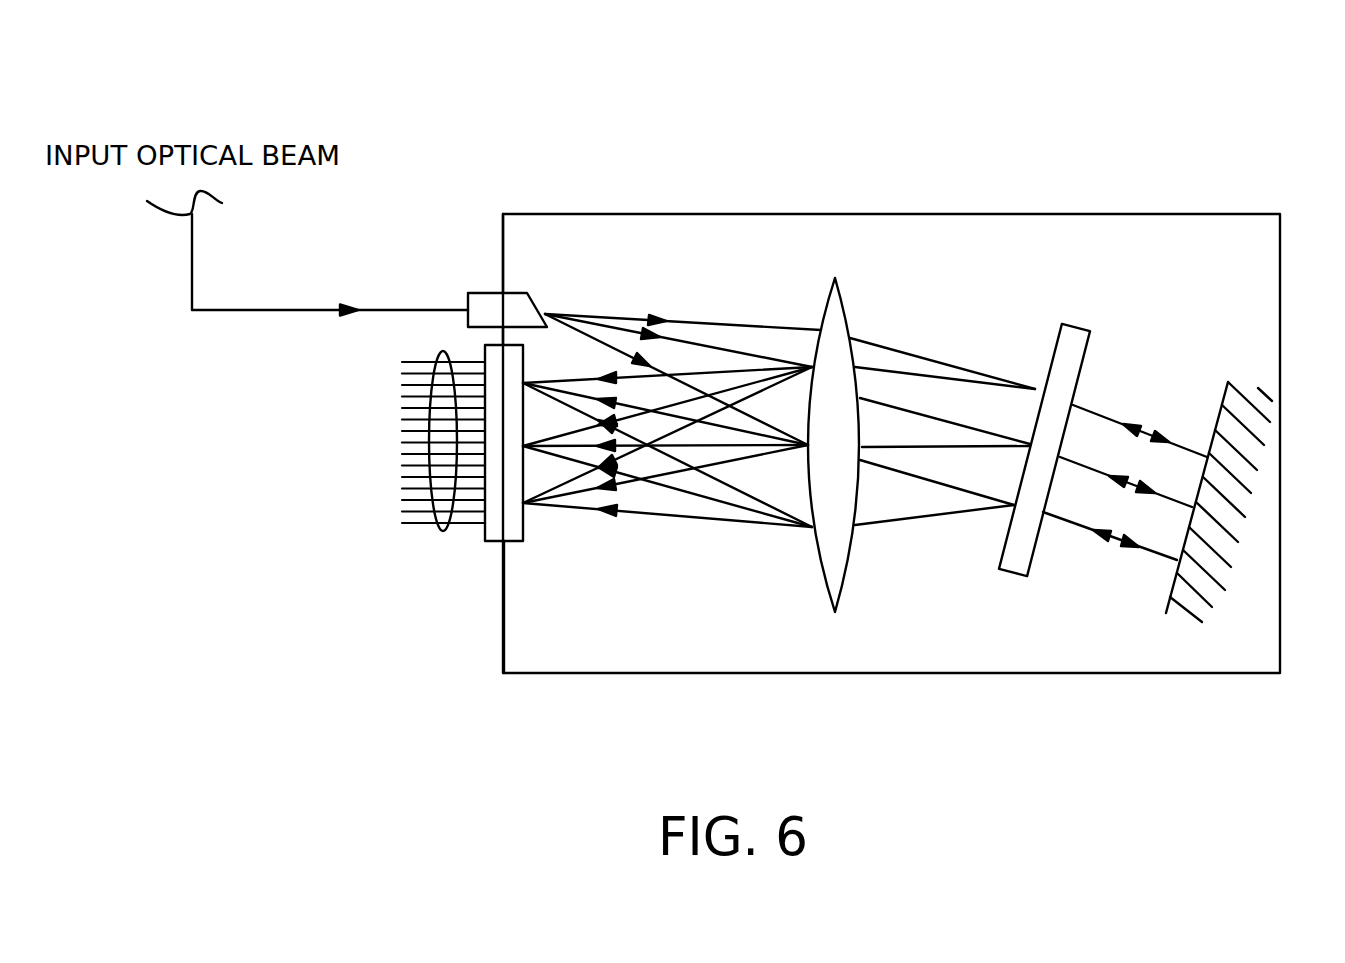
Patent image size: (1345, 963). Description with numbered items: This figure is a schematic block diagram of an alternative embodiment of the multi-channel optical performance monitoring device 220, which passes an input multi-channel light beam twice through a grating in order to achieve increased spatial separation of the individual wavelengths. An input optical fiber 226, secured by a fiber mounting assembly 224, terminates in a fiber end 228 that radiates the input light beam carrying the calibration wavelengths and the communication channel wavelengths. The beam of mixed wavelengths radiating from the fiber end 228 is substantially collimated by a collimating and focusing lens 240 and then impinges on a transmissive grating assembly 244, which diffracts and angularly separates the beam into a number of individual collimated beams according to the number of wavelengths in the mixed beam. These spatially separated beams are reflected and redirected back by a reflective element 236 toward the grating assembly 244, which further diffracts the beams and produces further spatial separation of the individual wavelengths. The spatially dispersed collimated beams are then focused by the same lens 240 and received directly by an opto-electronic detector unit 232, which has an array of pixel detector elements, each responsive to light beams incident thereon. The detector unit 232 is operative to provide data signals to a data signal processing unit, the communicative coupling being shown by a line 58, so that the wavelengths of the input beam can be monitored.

The multi-channel optical performance monitoring device 220 is at (1250, 150).
The input optical fiber 226 is at (387, 310).
The fiber mounting assembly 224 is at (495, 307).
The fiber end 228 is at (542, 312).
The opto-electronic detector unit 232 is at (523, 530).
The line 58 is at (448, 530).
The collimating and focusing lens 240 is at (833, 332).
The transmissive grating assembly 244 is at (1072, 337).
The reflective element 236 is at (1197, 600).